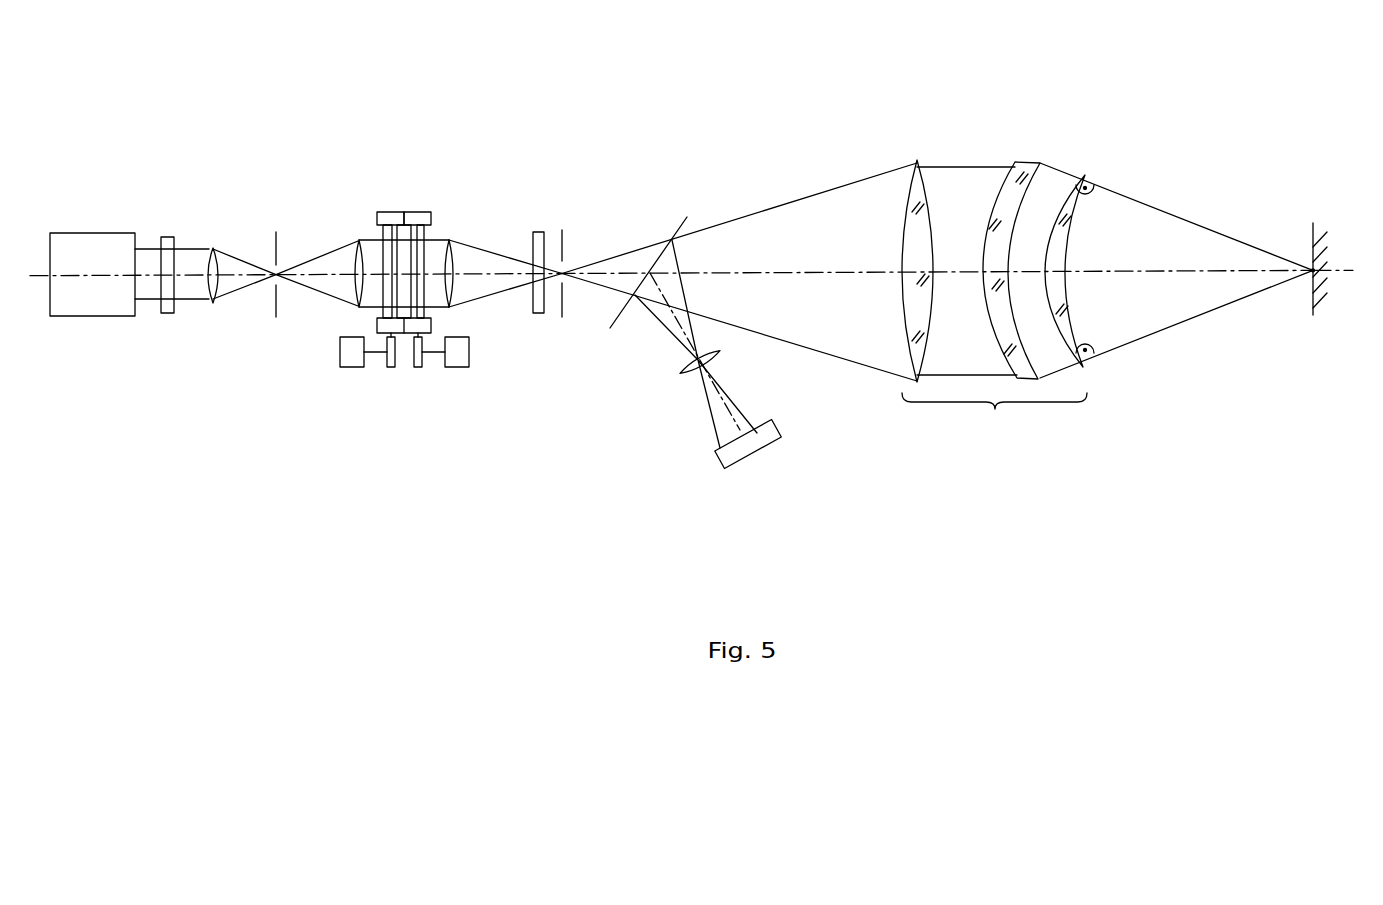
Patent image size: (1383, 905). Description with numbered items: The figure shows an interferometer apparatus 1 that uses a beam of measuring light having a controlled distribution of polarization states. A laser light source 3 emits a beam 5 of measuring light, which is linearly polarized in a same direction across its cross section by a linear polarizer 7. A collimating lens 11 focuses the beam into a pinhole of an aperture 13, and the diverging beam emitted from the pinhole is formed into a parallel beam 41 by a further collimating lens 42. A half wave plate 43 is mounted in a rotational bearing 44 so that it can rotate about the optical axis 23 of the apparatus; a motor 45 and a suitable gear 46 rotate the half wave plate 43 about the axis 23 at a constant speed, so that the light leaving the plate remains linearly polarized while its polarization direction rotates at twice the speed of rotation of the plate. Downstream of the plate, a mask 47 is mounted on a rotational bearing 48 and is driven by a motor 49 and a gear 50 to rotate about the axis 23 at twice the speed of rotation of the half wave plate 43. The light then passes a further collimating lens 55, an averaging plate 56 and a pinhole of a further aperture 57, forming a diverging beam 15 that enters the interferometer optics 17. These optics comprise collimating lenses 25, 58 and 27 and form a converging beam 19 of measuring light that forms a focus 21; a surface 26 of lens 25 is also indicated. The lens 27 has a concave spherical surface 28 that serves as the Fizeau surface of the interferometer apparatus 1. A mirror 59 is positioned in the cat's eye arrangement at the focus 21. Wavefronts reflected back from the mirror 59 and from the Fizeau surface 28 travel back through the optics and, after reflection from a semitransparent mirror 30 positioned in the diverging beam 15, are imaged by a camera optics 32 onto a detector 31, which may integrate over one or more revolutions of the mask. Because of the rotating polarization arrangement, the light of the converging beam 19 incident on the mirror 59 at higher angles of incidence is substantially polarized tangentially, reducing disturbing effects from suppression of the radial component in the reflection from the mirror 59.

The interferometer apparatus 1 is at (592, 118).
The laser light source 3 is at (92, 232).
The beam of measuring light 5 is at (195, 247).
The linear polarizer 7 is at (166, 315).
The collimating lens 11 is at (214, 246).
The aperture 13 is at (278, 252).
The diverging beam 15 is at (784, 204).
The interferometer optics 17 is at (1015, 262).
The converging beam 19 is at (1176, 325).
The focus 21 is at (1310, 289).
The optical axis 23 is at (1338, 268).
The collimating lens 25 is at (917, 162).
The lens surface 26 is at (937, 167).
The lens 27 is at (1084, 176).
The concave spherical surface 28 is at (1096, 205).
The semitransparent mirror 30 is at (682, 225).
The detector 31 is at (760, 452).
The camera optics 32 is at (712, 357).
The parallel beam 41 is at (376, 236).
The further collimating lens 42 is at (357, 240).
The half wave plate 43 is at (381, 252).
The rotational bearing 44 is at (390, 211).
The motor 45 is at (351, 367).
The gear 46 is at (391, 367).
The mask 47 is at (426, 251).
The rotational bearing 48 is at (413, 211).
The motor 49 is at (456, 367).
The gear 50 is at (417, 367).
The further collimating lens 55 is at (451, 241).
The averaging plate 56 is at (538, 313).
The further aperture 57 is at (565, 249).
The collimating lens 58 is at (1028, 161).
The mirror 59 is at (1312, 237).